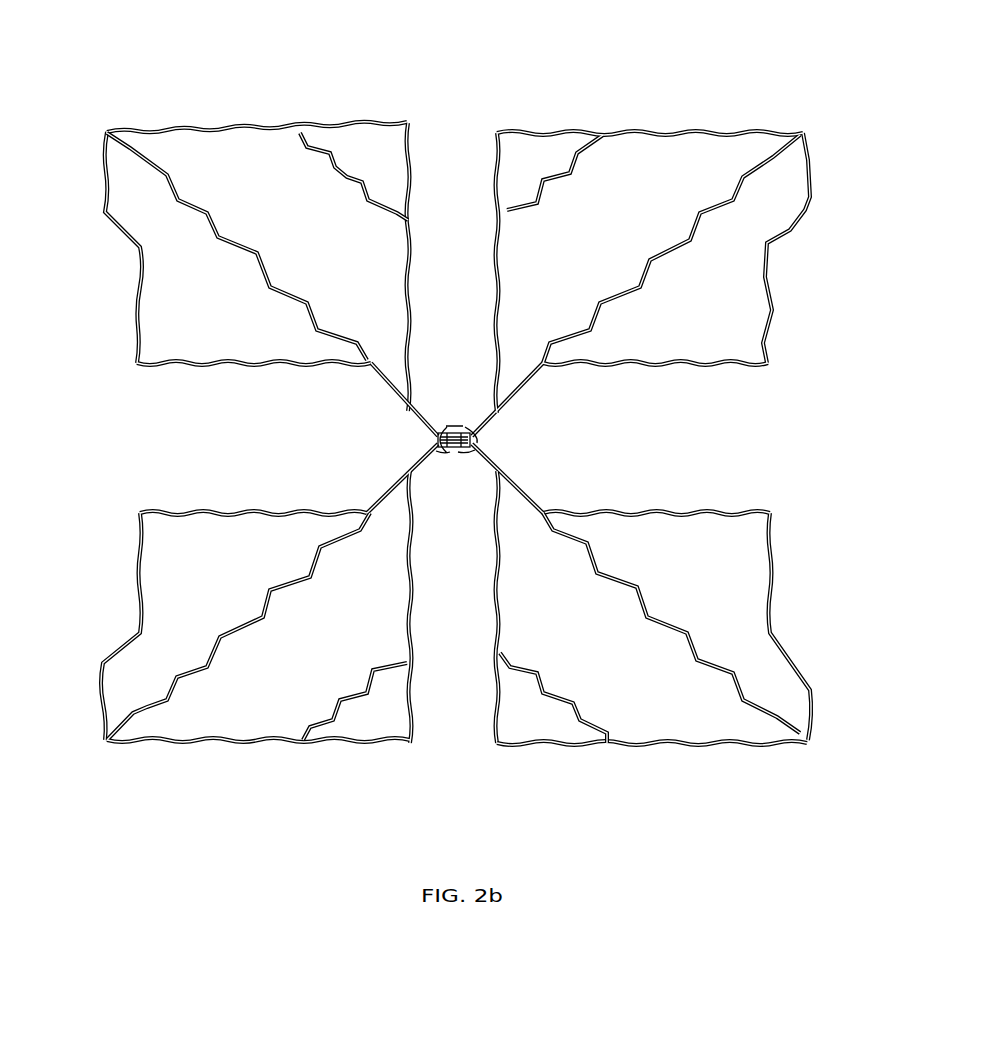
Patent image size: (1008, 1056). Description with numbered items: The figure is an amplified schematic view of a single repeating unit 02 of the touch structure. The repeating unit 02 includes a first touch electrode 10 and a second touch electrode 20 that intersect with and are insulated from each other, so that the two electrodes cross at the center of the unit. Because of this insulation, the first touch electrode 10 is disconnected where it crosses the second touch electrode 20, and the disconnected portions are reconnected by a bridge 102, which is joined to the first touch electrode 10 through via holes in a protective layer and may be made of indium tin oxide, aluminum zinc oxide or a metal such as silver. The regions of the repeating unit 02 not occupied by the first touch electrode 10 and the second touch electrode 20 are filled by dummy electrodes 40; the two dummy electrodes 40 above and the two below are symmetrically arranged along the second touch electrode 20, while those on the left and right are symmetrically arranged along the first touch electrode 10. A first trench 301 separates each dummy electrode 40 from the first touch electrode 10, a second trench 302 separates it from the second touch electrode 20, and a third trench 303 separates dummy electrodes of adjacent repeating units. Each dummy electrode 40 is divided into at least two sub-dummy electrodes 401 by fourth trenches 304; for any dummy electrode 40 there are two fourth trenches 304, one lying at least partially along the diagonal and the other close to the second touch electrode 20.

The repeating unit 02 is at (138, 28).
The first touch electrode 10 is at (675, 487).
The second touch electrode 20 is at (425, 727).
The dummy electrode 40 is at (764, 813).
The bridge 102 is at (545, 432).
The first trench 301 is at (143, 330).
The second trench 302 is at (408, 188).
The third trench 303 is at (177, 130).
The fourth trench 304 is at (233, 247).
The sub-dummy electrode 401 is at (748, 793).